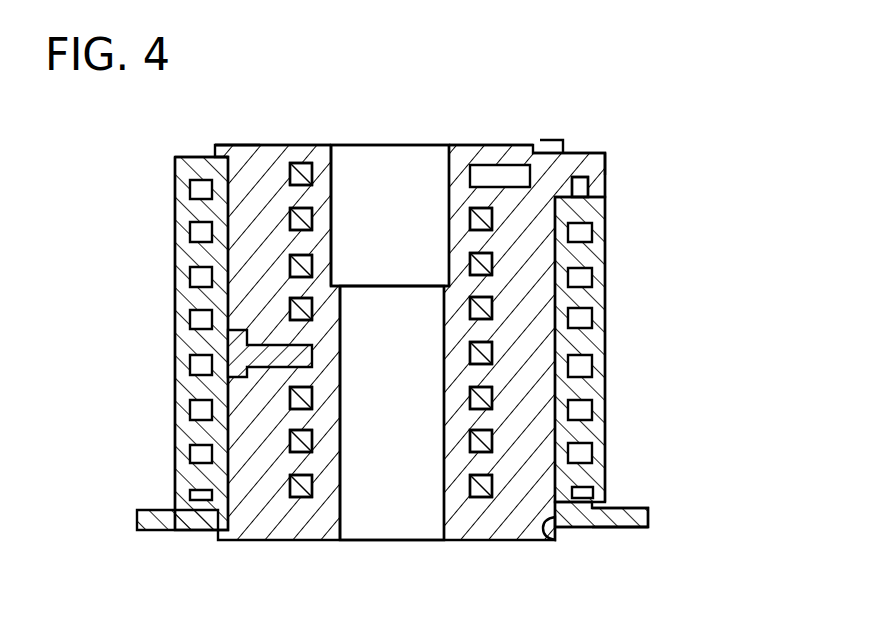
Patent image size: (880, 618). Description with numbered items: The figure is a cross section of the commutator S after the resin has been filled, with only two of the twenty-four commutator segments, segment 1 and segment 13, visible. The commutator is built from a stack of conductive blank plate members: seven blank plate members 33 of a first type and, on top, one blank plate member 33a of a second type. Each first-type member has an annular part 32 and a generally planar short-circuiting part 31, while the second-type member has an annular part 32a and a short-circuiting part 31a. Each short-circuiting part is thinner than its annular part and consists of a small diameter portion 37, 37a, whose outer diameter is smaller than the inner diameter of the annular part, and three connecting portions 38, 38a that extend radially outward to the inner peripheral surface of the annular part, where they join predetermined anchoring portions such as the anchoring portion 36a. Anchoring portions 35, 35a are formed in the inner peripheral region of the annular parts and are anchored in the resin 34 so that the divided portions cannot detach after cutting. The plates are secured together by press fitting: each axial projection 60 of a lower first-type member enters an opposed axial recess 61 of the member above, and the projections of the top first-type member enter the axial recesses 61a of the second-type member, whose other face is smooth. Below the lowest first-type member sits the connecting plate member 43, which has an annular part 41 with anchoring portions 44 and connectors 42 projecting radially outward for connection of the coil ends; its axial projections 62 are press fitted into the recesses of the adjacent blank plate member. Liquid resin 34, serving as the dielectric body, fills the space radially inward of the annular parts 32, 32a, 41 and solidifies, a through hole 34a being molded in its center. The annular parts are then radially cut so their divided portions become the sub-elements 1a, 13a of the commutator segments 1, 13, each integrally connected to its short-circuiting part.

The commutator segment 1 is at (607, 210).
The sub-element 1a is at (607, 160).
The commutator S is at (628, 165).
The commutator segment 13 is at (178, 219).
The sub-element 13a is at (180, 158).
The short-circuiting part 31 is at (425, 355).
The short-circuiting part 31a is at (455, 118).
The annular part 32 is at (178, 246).
The annular part 32a is at (178, 182).
The blank plate member of the first type 33 is at (606, 262).
The blank plate member of the second type 33a is at (606, 178).
The resin 34 is at (266, 150).
The through hole 34a is at (331, 210).
The anchoring portion 35 is at (222, 145).
The anchoring portion 35a is at (190, 156).
The anchoring portion 36a is at (553, 150).
The small diameter portion 37 is at (331, 247).
The small diameter portion 37a is at (305, 143).
The connecting portion 38 is at (323, 372).
The connecting portion 38a is at (488, 143).
The annular part 41 is at (591, 528).
The connector 42 is at (644, 528).
The connecting plate member 43 is at (665, 570).
The anchoring portion 44 is at (549, 541).
The axial projection 60 is at (606, 231).
The axial recess 61 is at (606, 251).
The axial recess 61a is at (582, 180).
The axial projection 62 is at (618, 508).